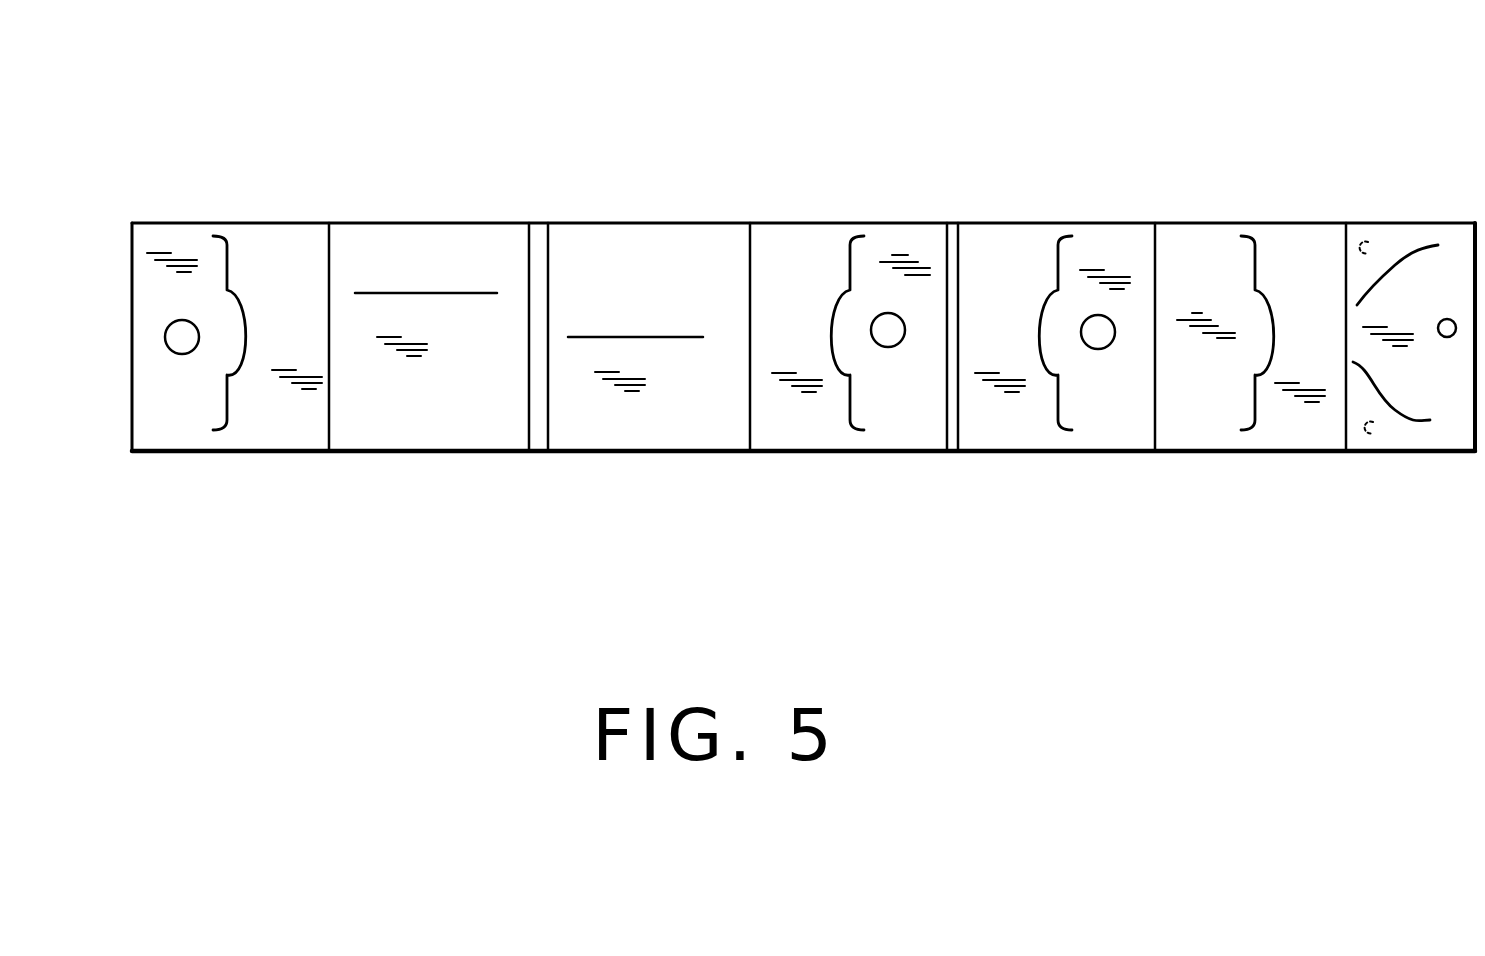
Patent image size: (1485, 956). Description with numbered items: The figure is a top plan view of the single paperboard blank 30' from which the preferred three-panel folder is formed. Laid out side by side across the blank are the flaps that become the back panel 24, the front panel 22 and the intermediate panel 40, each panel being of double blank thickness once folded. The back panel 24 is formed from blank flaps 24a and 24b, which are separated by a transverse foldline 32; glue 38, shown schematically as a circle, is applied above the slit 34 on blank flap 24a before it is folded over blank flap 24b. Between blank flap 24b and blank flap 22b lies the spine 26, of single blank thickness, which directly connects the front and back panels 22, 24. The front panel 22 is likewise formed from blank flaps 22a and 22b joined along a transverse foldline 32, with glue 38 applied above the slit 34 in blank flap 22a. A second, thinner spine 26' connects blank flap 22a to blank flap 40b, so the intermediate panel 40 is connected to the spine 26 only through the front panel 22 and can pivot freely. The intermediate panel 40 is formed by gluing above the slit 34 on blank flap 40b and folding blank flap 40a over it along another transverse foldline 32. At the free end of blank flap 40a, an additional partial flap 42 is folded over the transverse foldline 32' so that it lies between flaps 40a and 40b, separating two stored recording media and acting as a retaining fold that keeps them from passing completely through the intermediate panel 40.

The front panel 22 is at (958, 175).
The blank flap 22a is at (792, 418).
The blank flap 22b is at (640, 425).
The back panel 24 is at (542, 177).
The blank flap 24a is at (285, 428).
The blank flap 24b is at (460, 412).
The spine 26 is at (565, 369).
The second spine 26' is at (978, 400).
The blank 30' is at (803, 240).
The transverse foldline 32 is at (758, 347).
The transverse foldline 32' is at (1300, 368).
The slit 34 is at (247, 340).
The glue 38 is at (182, 354).
The intermediate panel 40 is at (1348, 175).
The blank flap 40a is at (1210, 418).
The blank flap 40b is at (1008, 417).
The partial flap 42 is at (1445, 412).